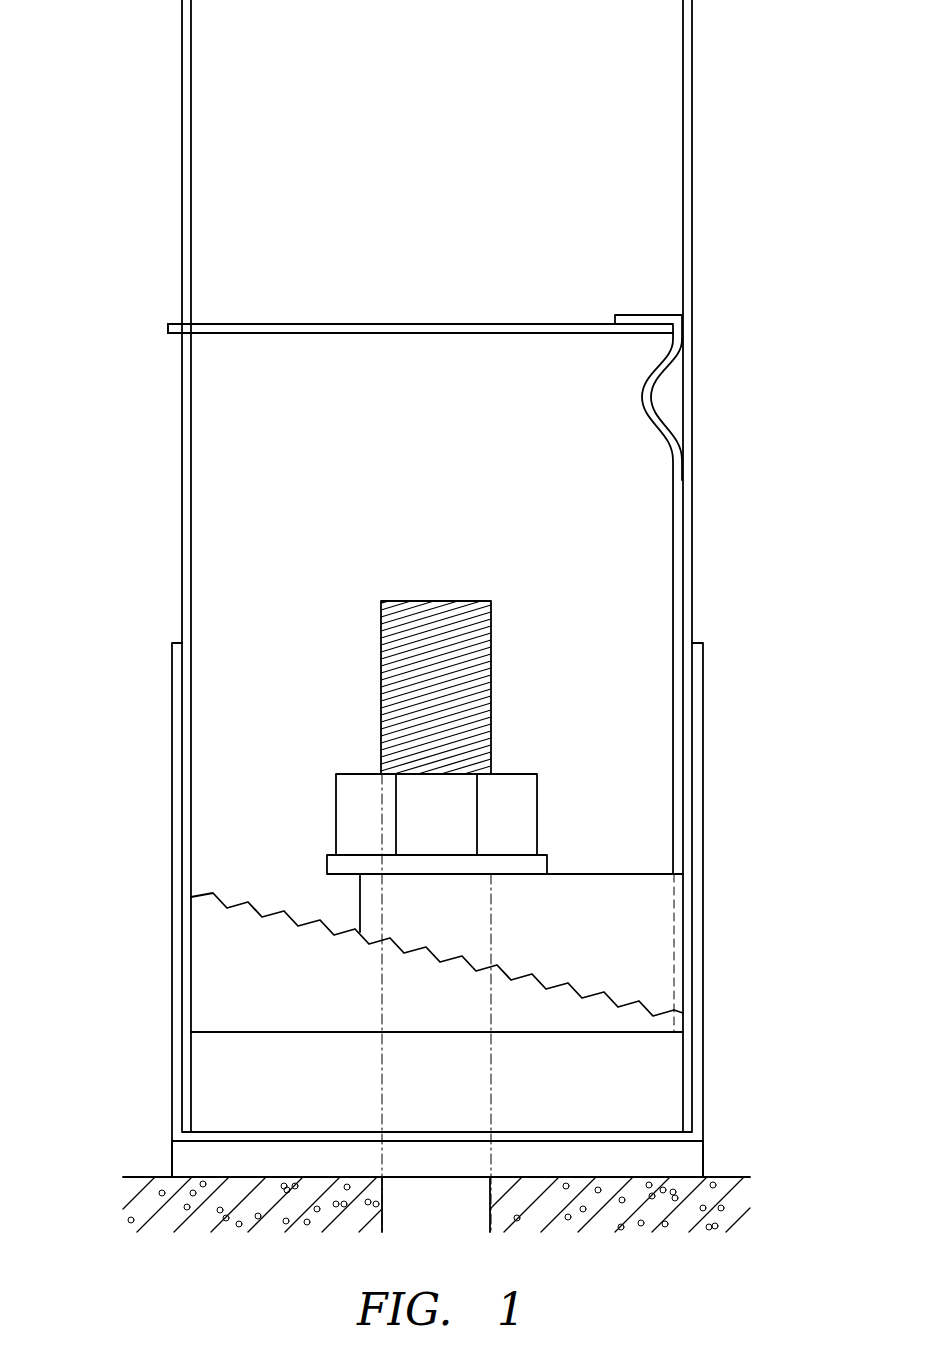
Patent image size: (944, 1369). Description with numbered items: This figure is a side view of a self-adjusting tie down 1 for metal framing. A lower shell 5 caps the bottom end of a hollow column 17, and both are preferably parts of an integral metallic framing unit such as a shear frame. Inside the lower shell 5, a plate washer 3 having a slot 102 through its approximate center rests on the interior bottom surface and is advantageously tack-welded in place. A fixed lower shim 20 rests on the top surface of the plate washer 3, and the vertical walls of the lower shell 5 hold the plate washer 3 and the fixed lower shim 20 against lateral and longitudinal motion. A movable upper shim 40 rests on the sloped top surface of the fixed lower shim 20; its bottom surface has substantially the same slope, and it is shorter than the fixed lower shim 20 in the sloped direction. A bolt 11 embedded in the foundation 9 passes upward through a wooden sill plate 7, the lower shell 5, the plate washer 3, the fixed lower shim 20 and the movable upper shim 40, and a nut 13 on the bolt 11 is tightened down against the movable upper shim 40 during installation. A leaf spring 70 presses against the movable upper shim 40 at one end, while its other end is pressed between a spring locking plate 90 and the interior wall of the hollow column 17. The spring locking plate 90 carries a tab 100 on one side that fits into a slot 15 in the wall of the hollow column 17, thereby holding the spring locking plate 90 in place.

The self-adjusting tie down 1 is at (130, 441).
The plate washer 3 is at (205, 1085).
The lower shell 5 is at (172, 712).
The wooden sill plate 7 is at (185, 1160).
The foundation 9 is at (715, 1185).
The bolt 11 is at (405, 602).
The nut 13 is at (527, 815).
The slot 15 is at (172, 324).
The hollow column 17 is at (692, 132).
The fixed lower shim 20 is at (213, 978).
The movable upper shim 40 is at (603, 890).
The leaf spring 70 is at (674, 483).
The spring locking plate 90 is at (305, 324).
The tab 100 is at (168, 329).
The slot 102 is at (490, 1082).